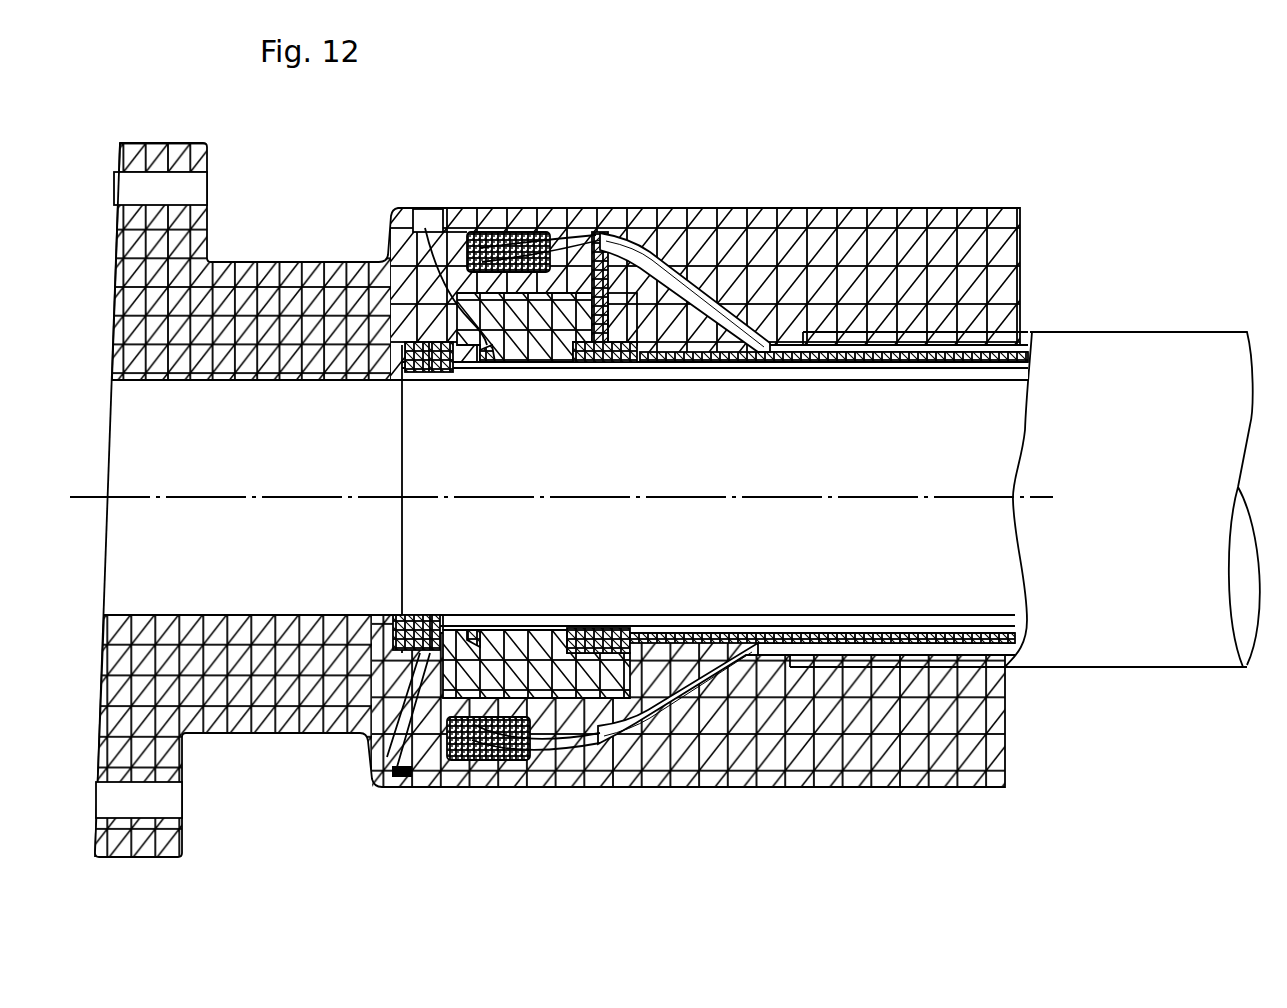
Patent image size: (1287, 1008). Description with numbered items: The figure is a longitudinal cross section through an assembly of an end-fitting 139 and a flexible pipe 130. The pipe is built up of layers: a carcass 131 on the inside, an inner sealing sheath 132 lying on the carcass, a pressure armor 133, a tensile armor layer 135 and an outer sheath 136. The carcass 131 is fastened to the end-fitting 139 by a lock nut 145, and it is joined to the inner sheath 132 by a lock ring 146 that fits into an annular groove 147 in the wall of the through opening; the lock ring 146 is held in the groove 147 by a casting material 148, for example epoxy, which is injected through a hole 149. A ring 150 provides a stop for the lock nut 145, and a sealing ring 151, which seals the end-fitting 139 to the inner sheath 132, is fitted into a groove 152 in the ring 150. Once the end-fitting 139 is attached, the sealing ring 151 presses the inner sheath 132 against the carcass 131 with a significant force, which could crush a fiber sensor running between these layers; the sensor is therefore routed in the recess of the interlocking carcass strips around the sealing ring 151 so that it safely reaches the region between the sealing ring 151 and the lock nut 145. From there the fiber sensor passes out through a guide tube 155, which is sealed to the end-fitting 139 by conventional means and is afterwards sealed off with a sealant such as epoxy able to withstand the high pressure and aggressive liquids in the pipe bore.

The pipe connection 130 is at (908, 549).
The carcass 131 is at (468, 380).
The inner sealing sheath 132 is at (735, 360).
The pressure armor 133 is at (910, 372).
The tensile armor layer 135 is at (490, 258).
The outer sheath 136 is at (1082, 332).
The end-fitting 139 is at (536, 803).
The lock nut 145 is at (408, 380).
The lock ring 146 is at (604, 362).
The annular groove 147 is at (645, 325).
The casting material 148 is at (598, 300).
The hole 149 is at (690, 268).
The ring 150 is at (545, 345).
The sealing ring 151 is at (422, 222).
The groove 152 is at (511, 372).
The guide tube 155 is at (366, 741).